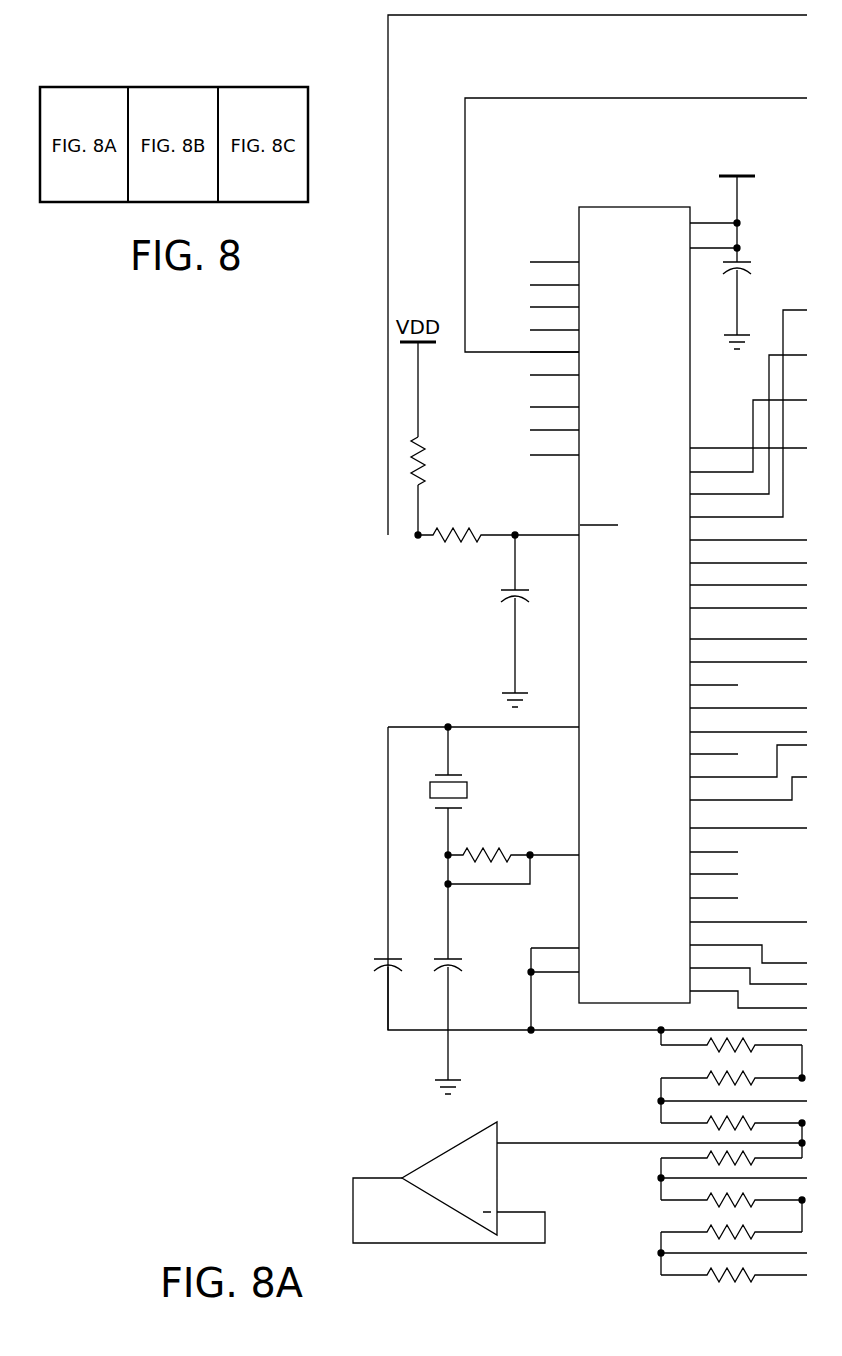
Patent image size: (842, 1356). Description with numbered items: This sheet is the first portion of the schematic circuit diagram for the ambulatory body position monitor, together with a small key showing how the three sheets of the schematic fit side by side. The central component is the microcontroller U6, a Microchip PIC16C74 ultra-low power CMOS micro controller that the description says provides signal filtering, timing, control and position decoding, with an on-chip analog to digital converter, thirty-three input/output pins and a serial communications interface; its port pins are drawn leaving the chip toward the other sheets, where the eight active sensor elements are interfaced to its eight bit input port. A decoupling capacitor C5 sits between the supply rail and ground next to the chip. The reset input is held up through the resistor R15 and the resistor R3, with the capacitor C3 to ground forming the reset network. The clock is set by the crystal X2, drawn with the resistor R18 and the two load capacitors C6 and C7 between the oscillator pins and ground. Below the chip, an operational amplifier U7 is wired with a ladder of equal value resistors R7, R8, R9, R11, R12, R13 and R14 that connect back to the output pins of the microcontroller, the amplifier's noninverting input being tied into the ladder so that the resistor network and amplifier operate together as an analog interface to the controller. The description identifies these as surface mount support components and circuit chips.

The PIC16C74PQ microcontroller U6 is at (597, 592).
The 0.01 decoupling capacitor C5 is at (748, 249).
The 330K pull-up resistor R15 is at (452, 470).
The 100K reset resistor R3 is at (466, 535).
The 2.2uF/6.3V reset capacitor C3 is at (459, 621).
The 76.8 kHz crystal X2 is at (487, 791).
The 330K oscillator resistor R18 is at (489, 890).
The 15 pF oscillator capacitor C6 is at (373, 982).
The 15 pF oscillator capacitor C7 is at (434, 1013).
The TLC27L2 operational amplifier U7:B U7 is at (446, 1181).
The 68K ladder resistor R7 is at (683, 1052).
The 68K ladder resistor R8 is at (683, 1085).
The 68K ladder resistor R9 is at (683, 1120).
The 68K ladder resistor R11 is at (683, 1165).
The 68K ladder resistor R12 is at (683, 1200).
The 68K ladder resistor R13 is at (683, 1233).
The 68K ladder resistor R14 is at (686, 1271).